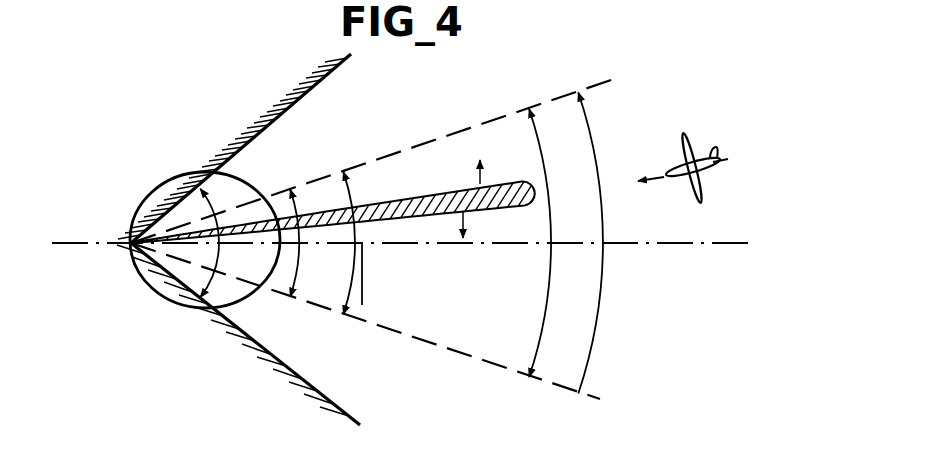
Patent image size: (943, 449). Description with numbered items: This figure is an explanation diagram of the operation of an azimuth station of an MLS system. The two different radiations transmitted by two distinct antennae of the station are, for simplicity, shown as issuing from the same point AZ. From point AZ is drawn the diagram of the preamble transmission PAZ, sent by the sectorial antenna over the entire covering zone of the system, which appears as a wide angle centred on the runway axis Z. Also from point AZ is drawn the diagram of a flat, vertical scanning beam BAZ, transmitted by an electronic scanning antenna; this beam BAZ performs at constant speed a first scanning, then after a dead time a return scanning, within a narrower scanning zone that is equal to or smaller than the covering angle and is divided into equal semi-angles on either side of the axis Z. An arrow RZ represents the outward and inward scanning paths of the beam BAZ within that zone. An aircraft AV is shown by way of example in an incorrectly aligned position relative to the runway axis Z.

The runway axis Z is at (79, 240).
The azimuth station point AZ is at (563, 279).
The preamble transmission diagram PAZ is at (255, 190).
The scanning beam BAZ is at (500, 182).
The scanning path arrow RZ is at (603, 280).
The aircraft AV is at (680, 162).